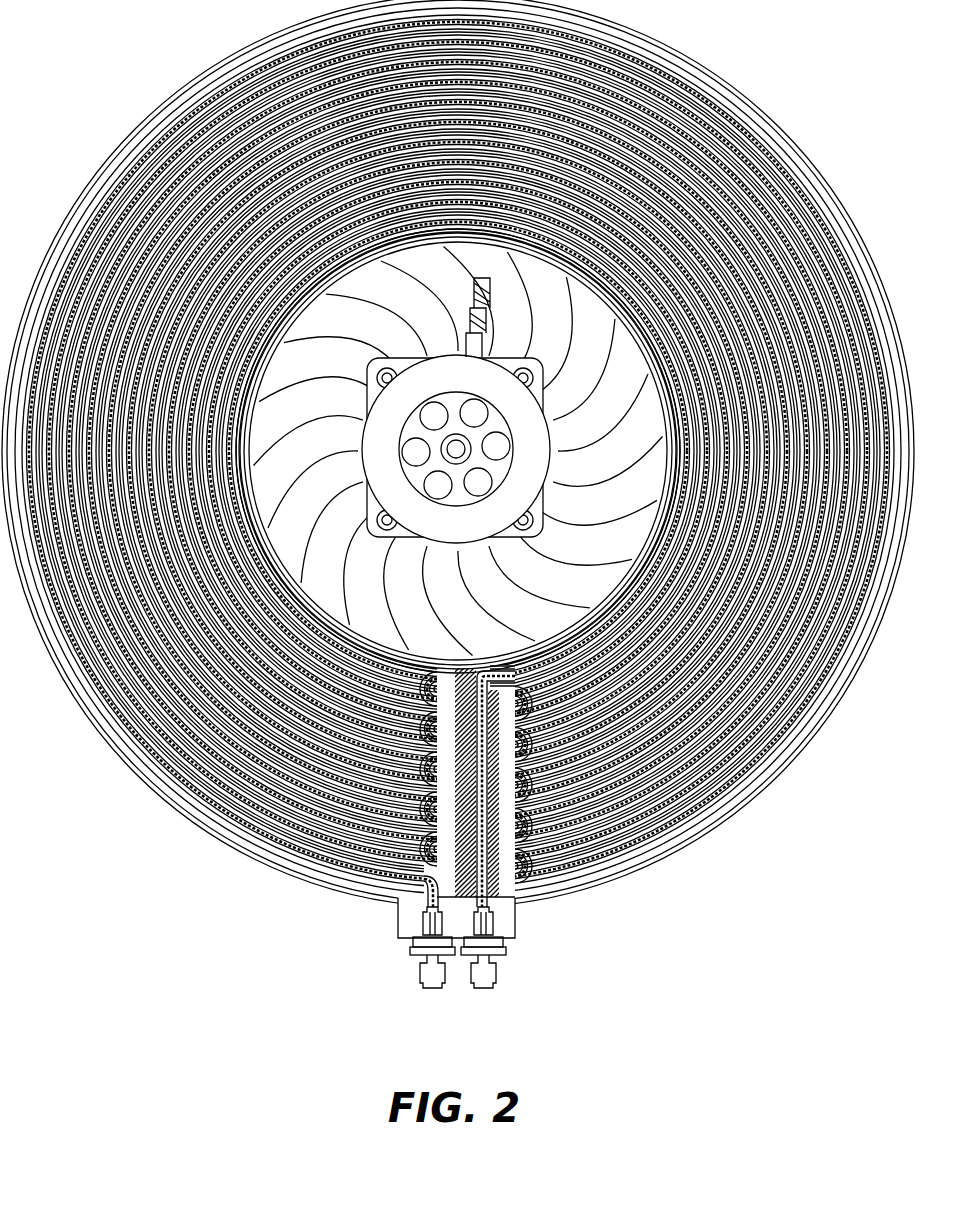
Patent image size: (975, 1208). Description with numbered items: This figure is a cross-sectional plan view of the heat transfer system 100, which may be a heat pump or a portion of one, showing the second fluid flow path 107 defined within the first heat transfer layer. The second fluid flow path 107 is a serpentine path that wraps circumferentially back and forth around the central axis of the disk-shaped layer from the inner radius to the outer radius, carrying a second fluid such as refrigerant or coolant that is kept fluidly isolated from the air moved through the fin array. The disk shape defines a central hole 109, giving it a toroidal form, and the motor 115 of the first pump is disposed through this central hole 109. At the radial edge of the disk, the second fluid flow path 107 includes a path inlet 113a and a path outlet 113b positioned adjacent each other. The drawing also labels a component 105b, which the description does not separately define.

The heat transfer system 100 is at (92, 112).
The fan 105b is at (544, 398).
The second fluid flow path 107 is at (533, 845).
The central hole 109 is at (402, 357).
The path inlet 113a is at (490, 988).
The path outlet 113b is at (433, 988).
The motor 115 is at (446, 525).